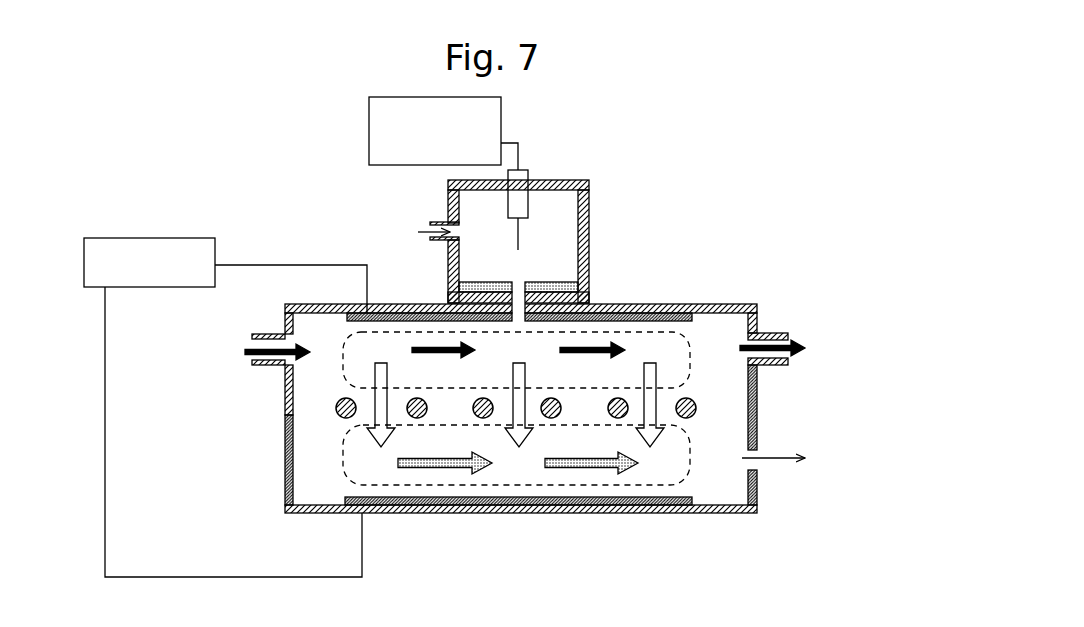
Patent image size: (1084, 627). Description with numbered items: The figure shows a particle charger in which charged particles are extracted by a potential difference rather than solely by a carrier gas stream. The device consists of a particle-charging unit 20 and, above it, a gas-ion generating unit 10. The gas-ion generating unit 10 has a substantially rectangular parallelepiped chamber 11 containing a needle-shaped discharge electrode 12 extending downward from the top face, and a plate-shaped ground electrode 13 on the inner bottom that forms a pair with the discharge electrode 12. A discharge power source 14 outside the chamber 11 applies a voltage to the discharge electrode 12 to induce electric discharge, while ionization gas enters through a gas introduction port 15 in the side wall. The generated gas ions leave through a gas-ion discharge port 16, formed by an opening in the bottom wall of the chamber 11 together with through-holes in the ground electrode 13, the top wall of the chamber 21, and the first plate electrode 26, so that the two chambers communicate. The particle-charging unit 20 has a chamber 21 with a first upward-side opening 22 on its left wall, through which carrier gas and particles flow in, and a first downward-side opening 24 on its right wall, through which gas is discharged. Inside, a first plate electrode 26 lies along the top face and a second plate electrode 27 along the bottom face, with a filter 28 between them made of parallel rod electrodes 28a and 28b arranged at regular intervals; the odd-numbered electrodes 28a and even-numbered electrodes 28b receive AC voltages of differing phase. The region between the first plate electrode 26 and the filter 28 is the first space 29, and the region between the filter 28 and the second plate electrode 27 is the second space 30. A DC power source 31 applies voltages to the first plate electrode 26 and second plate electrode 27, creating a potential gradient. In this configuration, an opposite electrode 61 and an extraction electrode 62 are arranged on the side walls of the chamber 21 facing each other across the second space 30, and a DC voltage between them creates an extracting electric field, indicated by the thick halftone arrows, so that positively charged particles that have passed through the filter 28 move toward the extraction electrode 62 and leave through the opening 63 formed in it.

The gas-ion generating unit 10 is at (563, 160).
The chamber 11 is at (589, 194).
The discharge electrode 12 is at (518, 237).
The ground electrode 13 is at (557, 283).
The discharge power source 14 is at (369, 141).
The gas introduction port 15 is at (442, 222).
The gas-ion discharge port 16 is at (452, 279).
The particle-charging unit 20 is at (654, 277).
The chamber 21 is at (750, 304).
The first upward-side opening 22 is at (268, 334).
The first downward-side opening 24 is at (782, 333).
The first plate electrode 26 is at (345, 315).
The second plate electrode 27 is at (345, 500).
The filter 28 is at (534, 499).
The rod electrode 28a is at (353, 417).
The rod electrode 28b is at (423, 417).
The first space 29 is at (690, 340).
The second space 30 is at (343, 443).
The DC power source 31 is at (135, 237).
The opposite electrode 61 is at (285, 460).
The extraction electrode 62 is at (758, 428).
The opening 63 is at (760, 472).